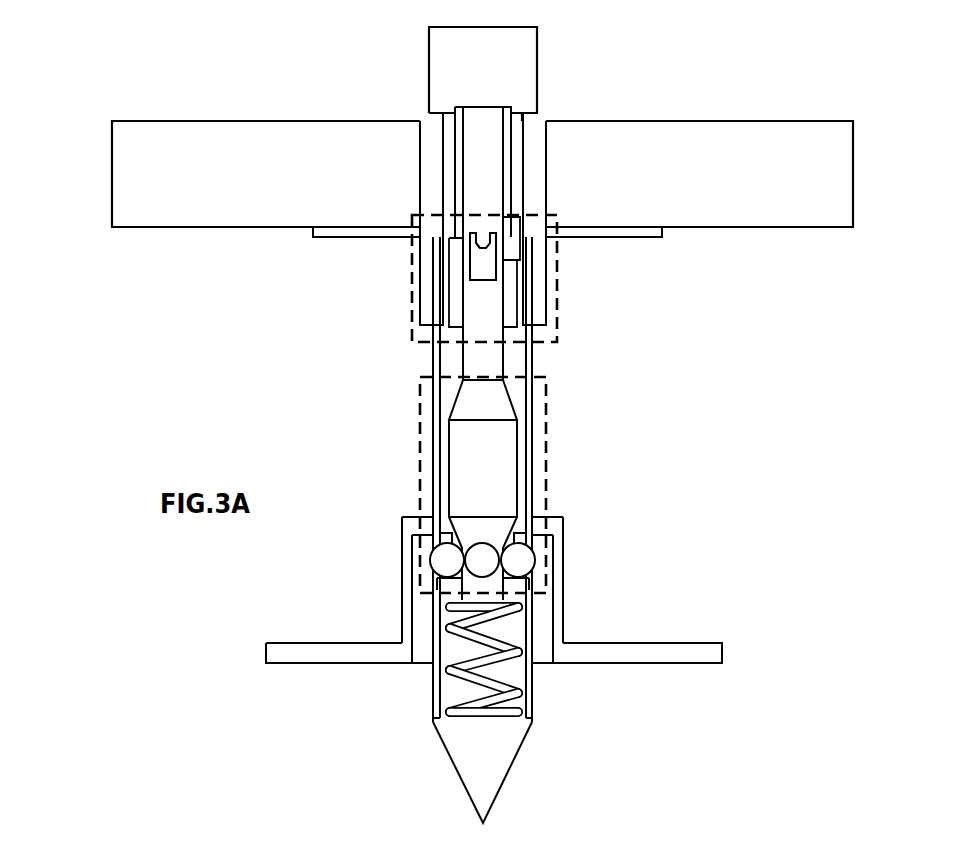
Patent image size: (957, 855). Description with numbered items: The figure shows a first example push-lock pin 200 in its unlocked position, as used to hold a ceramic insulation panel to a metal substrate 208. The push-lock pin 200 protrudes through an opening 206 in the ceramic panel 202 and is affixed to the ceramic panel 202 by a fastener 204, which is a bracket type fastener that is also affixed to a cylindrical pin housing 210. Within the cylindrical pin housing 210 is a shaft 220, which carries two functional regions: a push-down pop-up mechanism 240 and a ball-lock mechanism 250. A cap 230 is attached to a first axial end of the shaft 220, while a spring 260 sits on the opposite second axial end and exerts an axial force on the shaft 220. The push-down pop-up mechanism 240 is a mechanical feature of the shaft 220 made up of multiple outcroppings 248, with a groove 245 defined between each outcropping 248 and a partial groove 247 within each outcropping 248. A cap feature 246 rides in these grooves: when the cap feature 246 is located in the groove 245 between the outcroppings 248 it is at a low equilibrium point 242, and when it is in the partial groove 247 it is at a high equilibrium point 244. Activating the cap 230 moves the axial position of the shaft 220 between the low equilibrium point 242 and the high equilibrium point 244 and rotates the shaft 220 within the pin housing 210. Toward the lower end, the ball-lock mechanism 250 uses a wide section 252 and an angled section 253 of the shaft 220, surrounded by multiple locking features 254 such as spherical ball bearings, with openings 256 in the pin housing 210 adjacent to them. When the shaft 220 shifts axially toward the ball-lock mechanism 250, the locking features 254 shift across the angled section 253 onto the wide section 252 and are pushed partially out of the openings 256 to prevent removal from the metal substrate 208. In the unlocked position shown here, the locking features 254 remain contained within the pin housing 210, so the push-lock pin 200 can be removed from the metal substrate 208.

The push-lock pin 200 is at (380, 396).
The ceramic panel 202 is at (830, 188).
The fastener 204 is at (583, 233).
The opening 206 is at (430, 118).
The metal substrate 208 is at (313, 653).
The cylindrical pin housing 210 is at (533, 412).
The shaft 220 is at (489, 365).
The cap 230 is at (518, 60).
The push-down pop-up mechanism 240 is at (411, 297).
The low equilibrium point 242 is at (468, 268).
The high equilibrium point 244 is at (487, 246).
The groove 245 is at (465, 248).
The cap feature 246 is at (452, 232).
The partial groove 247 is at (478, 246).
The outcropping 248 is at (499, 250).
The ball-lock mechanism 250 is at (546, 457).
The wide section 252 is at (508, 508).
The angled section 253 is at (448, 528).
The locking features 254 is at (527, 560).
The openings 256 is at (531, 577).
The spring 260 is at (513, 693).